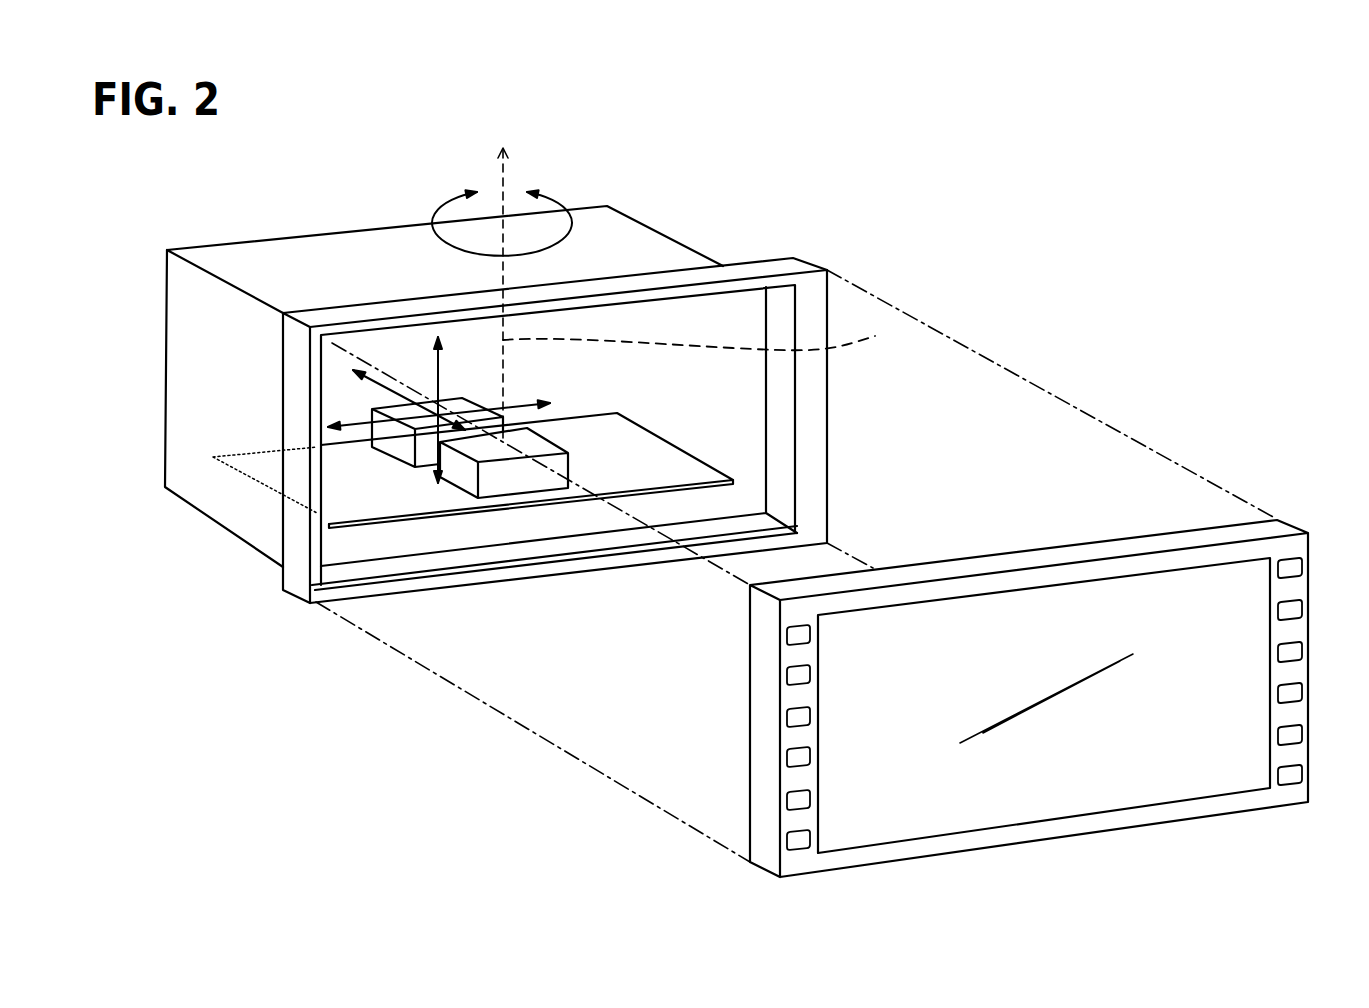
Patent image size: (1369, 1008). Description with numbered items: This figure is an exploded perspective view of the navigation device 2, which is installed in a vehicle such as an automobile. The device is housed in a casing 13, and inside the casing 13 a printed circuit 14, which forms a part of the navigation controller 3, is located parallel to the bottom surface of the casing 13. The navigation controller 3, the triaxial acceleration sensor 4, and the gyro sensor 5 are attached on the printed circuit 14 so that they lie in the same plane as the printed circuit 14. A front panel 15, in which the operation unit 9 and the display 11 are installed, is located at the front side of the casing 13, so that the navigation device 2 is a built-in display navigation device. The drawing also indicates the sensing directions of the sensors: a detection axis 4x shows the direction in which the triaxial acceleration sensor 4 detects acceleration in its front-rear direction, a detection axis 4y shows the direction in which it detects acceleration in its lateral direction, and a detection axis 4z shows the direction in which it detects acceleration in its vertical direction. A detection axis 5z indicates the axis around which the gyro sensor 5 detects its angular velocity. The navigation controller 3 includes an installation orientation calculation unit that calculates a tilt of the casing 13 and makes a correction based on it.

The navigation device 2 is at (496, 368).
The navigation controller 3 is at (557, 518).
The triaxial acceleration sensor 4 is at (398, 440).
The detection axis 4x is at (398, 416).
The detection axis 4y is at (353, 423).
The detection axis 4z is at (447, 413).
The gyro sensor 5 is at (517, 475).
The detection axis 5z is at (705, 337).
The operation unit 9 is at (797, 710).
The display 11 is at (1077, 767).
The casing 13 is at (398, 240).
The printed circuit 14 is at (617, 493).
The front panel 15 is at (1037, 687).